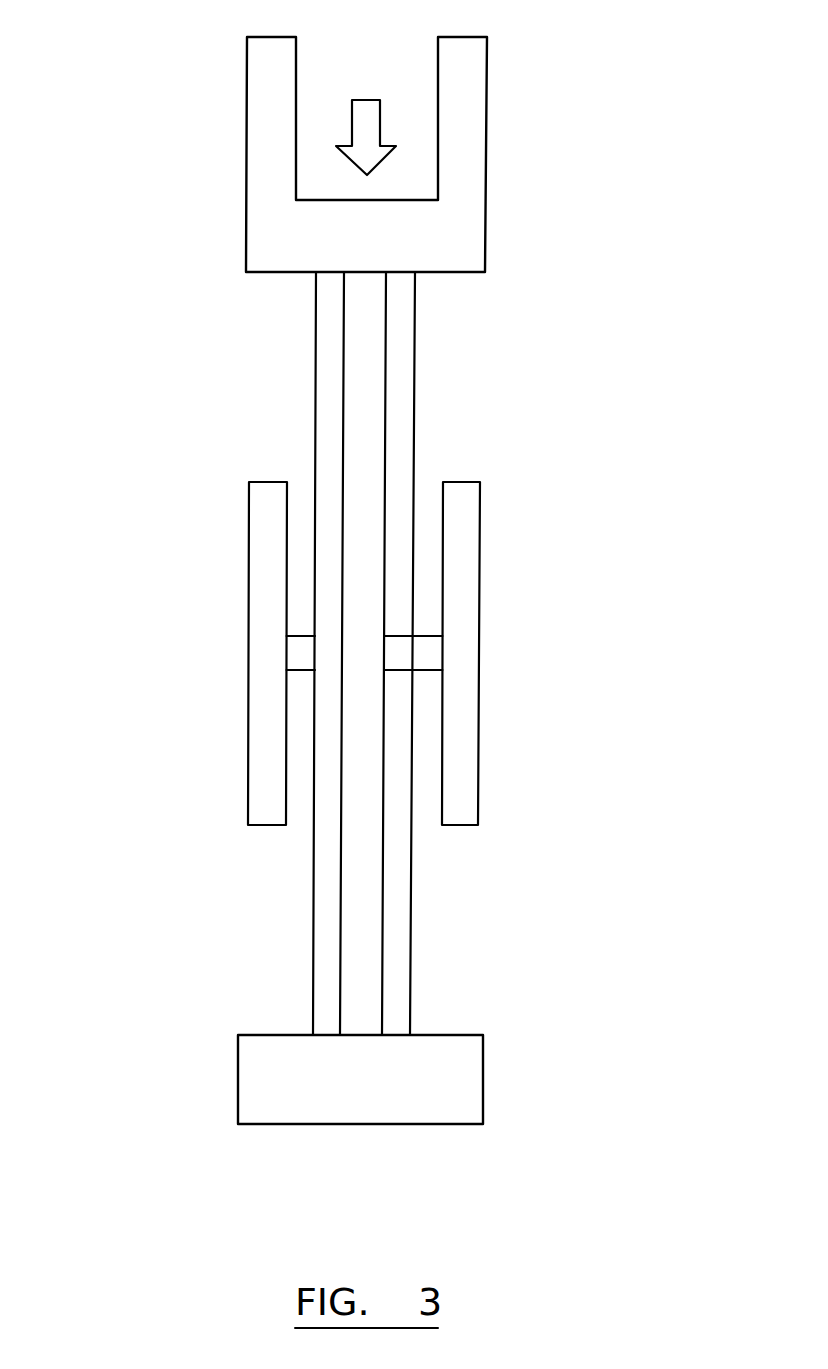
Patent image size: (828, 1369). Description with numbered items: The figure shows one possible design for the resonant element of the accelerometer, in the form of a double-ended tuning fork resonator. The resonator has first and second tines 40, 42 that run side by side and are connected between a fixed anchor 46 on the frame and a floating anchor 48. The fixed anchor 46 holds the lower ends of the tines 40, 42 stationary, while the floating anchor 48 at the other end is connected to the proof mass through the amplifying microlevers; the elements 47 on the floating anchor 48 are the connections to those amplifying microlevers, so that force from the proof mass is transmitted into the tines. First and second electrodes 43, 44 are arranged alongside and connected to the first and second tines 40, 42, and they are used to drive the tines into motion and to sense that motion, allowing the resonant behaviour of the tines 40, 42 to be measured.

The first tine 40 is at (398, 993).
The second tine 42 is at (327, 994).
The first electrode 43 is at (458, 789).
The second electrode 44 is at (265, 792).
The fixed anchor 46 is at (452, 1085).
The connections to the amplifying microlevers 47 is at (460, 82).
The floating anchor 48 is at (460, 242).